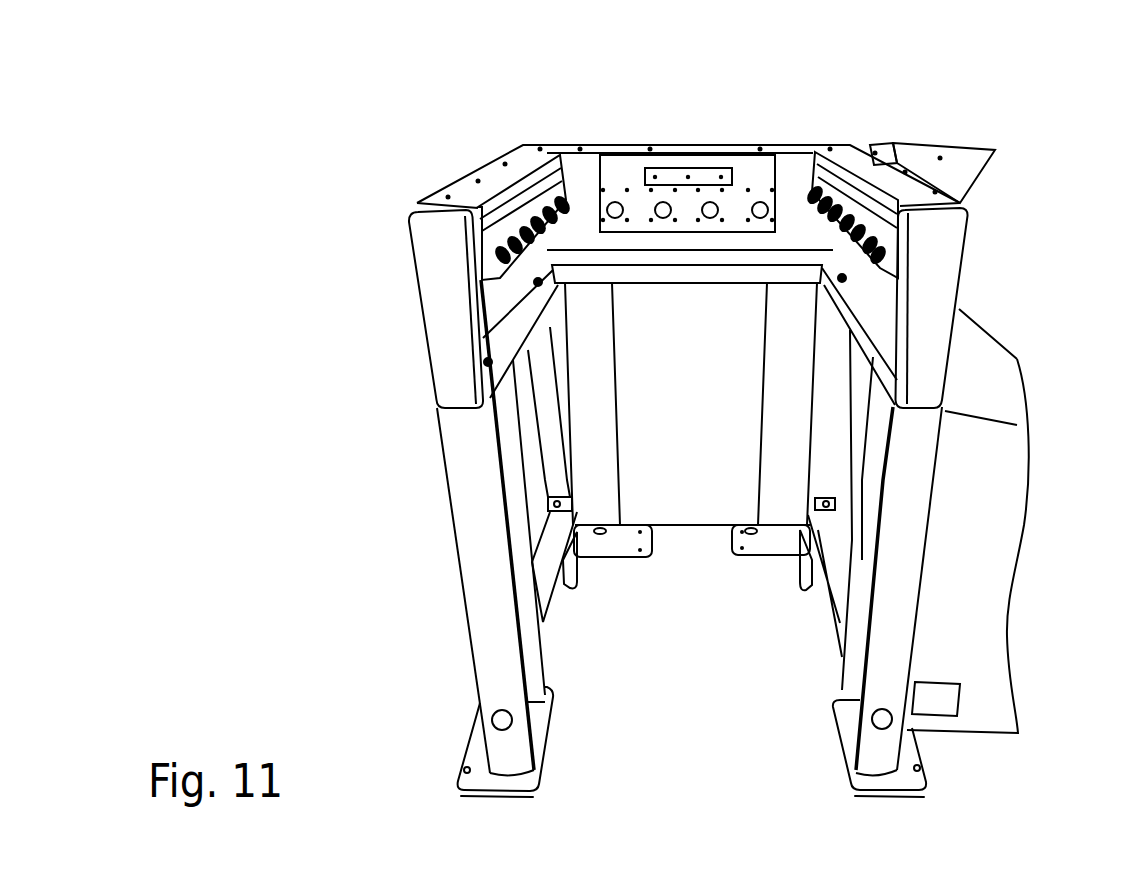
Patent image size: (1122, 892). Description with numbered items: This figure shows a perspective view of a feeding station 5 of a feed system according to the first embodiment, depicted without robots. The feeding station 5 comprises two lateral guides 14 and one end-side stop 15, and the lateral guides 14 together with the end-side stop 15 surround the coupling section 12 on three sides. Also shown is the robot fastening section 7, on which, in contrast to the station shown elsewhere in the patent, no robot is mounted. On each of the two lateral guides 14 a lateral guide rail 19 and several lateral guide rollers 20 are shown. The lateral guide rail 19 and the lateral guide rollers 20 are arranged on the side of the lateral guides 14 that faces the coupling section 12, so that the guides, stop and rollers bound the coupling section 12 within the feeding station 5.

The feeding station 5 is at (380, 136).
The robot fastening section 7 is at (968, 165).
The coupling section 12 is at (706, 667).
The lateral guide 14 is at (458, 363).
The end-side stop 15 is at (690, 148).
The lateral guide rail 19 is at (468, 234).
The lateral guide rollers 20 is at (522, 158).